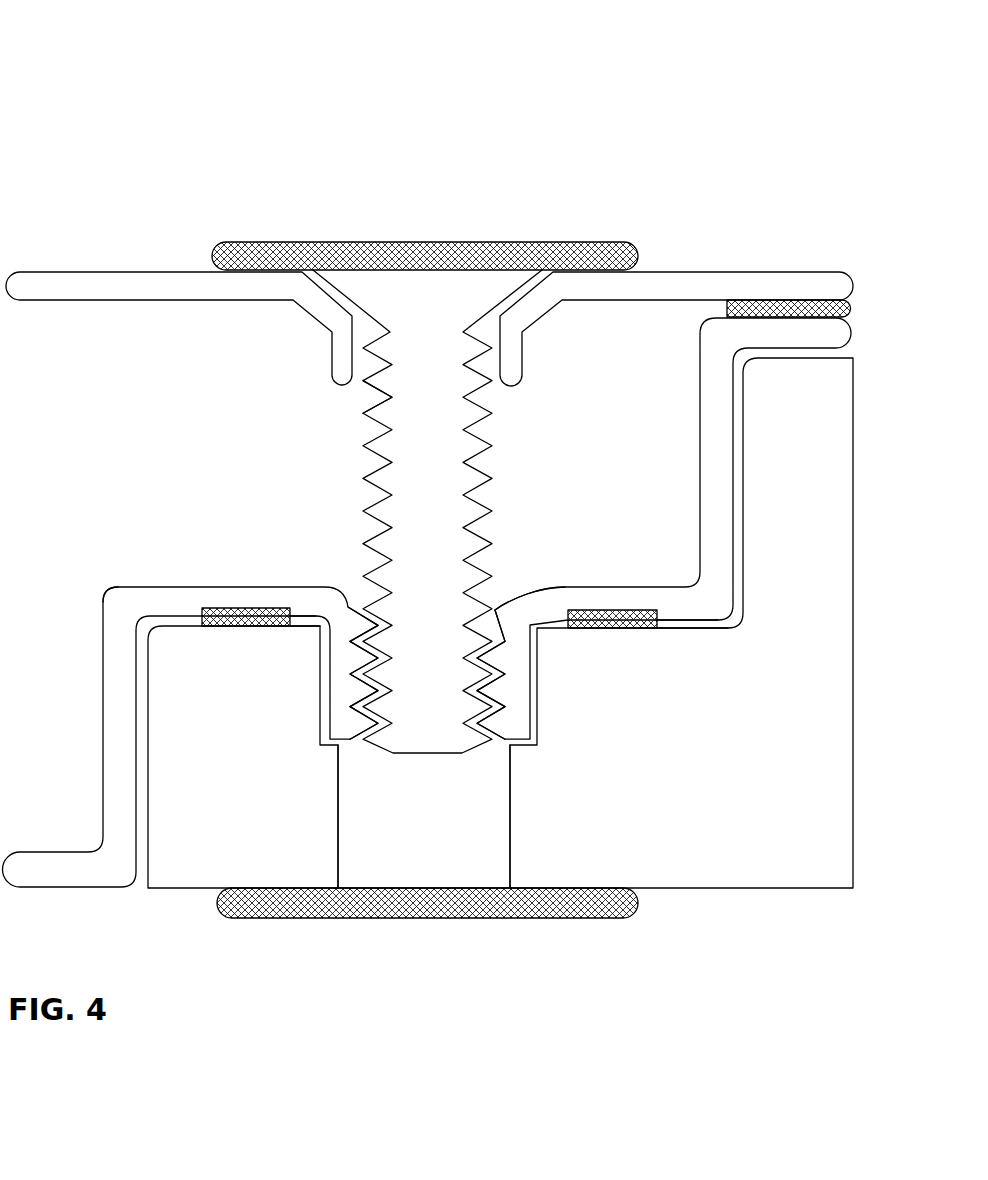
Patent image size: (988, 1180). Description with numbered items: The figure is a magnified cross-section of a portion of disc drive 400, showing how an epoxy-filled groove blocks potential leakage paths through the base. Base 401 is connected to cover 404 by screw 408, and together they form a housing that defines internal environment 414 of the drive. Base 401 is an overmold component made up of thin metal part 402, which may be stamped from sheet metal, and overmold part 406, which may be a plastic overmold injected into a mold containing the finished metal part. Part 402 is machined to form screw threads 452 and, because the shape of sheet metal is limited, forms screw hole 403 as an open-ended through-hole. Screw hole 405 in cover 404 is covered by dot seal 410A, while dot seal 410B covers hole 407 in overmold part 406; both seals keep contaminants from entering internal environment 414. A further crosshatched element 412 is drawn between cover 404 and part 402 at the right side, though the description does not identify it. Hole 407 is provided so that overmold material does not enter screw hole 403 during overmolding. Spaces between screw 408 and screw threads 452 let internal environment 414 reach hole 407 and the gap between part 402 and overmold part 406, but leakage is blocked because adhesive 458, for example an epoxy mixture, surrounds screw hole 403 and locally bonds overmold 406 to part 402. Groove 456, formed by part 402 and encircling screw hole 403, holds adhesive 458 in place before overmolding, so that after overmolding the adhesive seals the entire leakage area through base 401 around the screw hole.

The disc drive 400 is at (119, 92).
The base 401 is at (80, 741).
The metal part 402 is at (803, 343).
The screw hole 403 is at (493, 602).
The cover 404 is at (206, 295).
The screw hole 405 is at (360, 403).
The overmold part 406 is at (246, 838).
The hole 407 is at (443, 838).
The screw 408 is at (443, 469).
The dot seal 410A is at (355, 242).
The dot seal 410B is at (388, 918).
The insulating pad 412 is at (852, 313).
The internal environment 414 is at (86, 526).
The screw threads 452 is at (503, 662).
The groove 456 is at (208, 606).
The adhesive 458 is at (220, 627).